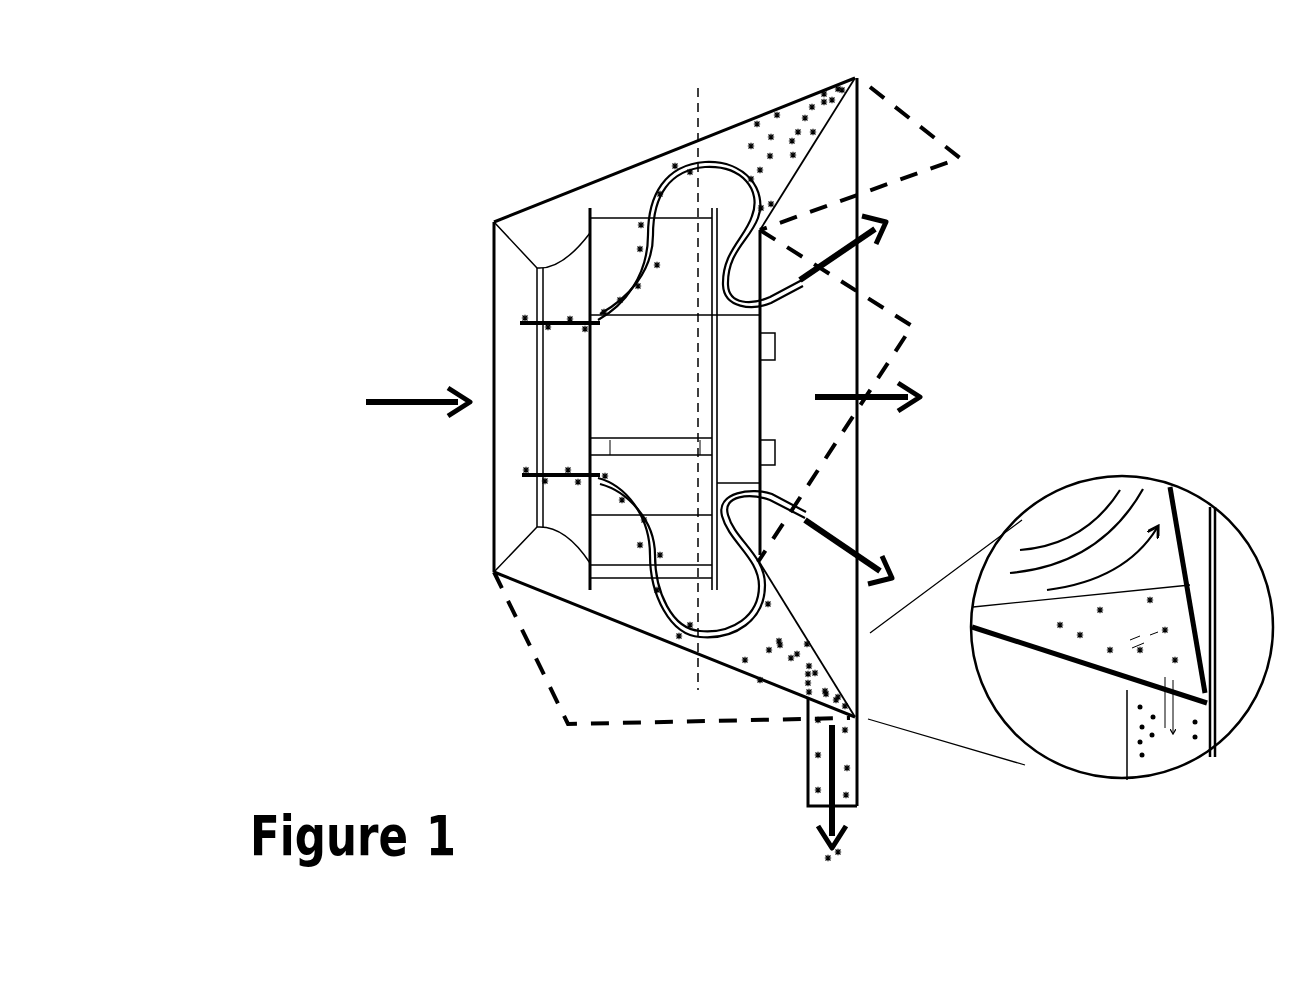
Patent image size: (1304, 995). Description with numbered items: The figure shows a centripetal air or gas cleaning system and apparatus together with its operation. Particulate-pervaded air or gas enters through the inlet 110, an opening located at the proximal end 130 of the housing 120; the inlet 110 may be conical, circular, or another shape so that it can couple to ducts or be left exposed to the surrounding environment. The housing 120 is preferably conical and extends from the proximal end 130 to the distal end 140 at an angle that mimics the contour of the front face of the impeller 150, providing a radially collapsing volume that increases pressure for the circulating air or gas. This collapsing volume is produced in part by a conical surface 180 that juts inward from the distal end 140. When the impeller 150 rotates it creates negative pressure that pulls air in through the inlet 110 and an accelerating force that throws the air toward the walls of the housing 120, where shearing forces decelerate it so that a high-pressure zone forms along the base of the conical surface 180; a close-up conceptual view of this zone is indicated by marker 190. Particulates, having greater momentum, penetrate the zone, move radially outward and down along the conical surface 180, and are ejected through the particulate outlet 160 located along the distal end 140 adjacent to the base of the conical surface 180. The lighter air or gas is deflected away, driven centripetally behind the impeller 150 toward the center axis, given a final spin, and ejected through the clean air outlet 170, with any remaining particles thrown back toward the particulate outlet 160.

The inlet 110 is at (495, 330).
The housing 120 is at (556, 700).
The proximal end 130 is at (492, 220).
The distal end 140 is at (856, 75).
The impeller 150 is at (640, 392).
The particulate outlet 160 is at (858, 768).
The clean air outlet 170 is at (860, 396).
The conical surface 180 is at (884, 158).
The marker for close-up view of high-pressure zone 190 is at (1148, 473).